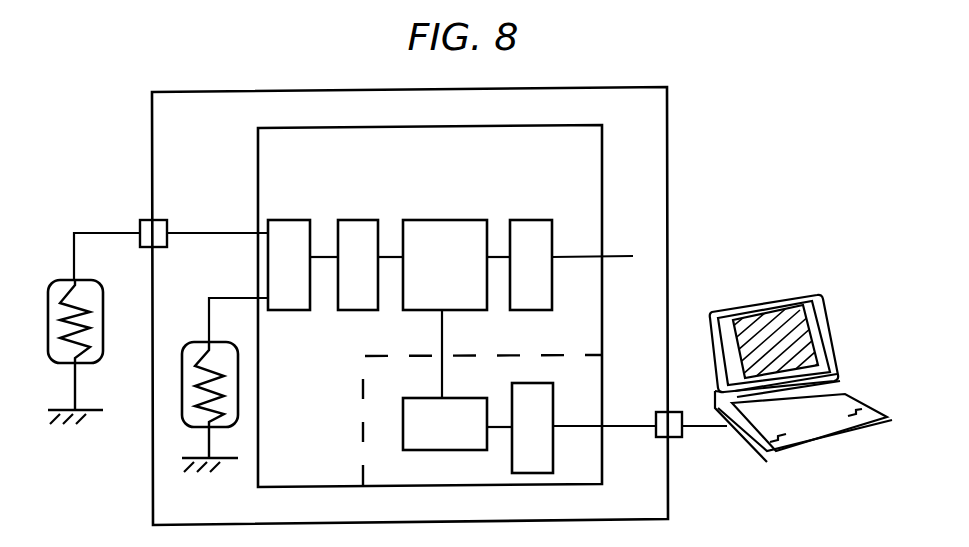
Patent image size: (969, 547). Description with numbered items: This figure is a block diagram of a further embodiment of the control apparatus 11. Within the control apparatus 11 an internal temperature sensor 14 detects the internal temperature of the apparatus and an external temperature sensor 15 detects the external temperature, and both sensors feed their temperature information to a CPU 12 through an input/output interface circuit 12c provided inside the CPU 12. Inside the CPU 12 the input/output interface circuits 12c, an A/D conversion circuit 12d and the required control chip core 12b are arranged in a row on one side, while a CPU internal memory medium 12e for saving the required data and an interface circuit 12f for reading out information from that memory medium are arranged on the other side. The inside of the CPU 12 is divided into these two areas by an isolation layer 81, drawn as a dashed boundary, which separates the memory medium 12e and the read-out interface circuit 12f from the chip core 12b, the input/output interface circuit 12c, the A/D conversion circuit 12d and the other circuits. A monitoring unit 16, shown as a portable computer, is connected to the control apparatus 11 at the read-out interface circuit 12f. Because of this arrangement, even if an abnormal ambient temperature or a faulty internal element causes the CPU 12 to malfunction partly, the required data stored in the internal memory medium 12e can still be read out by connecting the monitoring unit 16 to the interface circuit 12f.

The control apparatus 11 is at (282, 90).
The CPU 12 is at (483, 128).
The chip core 12b is at (467, 312).
The input/output interface circuit 12c is at (292, 220).
The A/D conversion circuit 12d is at (352, 312).
The CPU internal memory medium 12e is at (440, 450).
The interface circuit for reading out information from the CPU internal memory mediu 12f is at (555, 407).
The internal temperature sensor 14 is at (197, 342).
The external temperature sensor 15 is at (58, 280).
The monitoring unit 16 is at (768, 298).
The isolation layer 81 is at (602, 354).